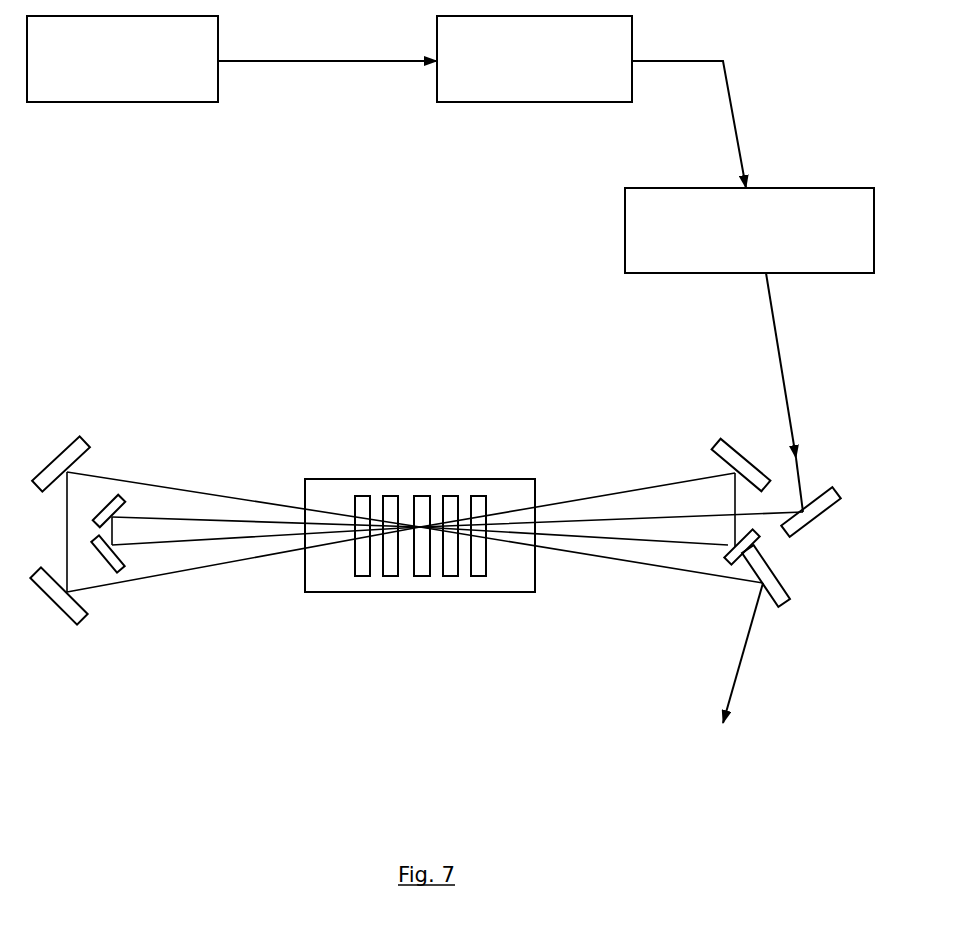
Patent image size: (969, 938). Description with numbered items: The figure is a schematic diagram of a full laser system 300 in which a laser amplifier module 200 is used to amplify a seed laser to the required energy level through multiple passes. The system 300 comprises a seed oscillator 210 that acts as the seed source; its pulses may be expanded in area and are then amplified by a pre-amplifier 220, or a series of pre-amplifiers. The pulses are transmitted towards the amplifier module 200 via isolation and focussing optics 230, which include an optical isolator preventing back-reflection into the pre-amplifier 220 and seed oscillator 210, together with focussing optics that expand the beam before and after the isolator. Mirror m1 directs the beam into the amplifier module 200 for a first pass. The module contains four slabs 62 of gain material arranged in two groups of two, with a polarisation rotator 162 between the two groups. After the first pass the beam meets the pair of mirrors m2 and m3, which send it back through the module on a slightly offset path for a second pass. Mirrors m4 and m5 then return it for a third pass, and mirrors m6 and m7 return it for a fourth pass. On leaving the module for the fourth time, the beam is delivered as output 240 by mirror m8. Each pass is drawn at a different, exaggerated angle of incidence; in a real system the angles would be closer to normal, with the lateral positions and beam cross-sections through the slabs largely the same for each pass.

The laser system 300 is at (378, 239).
The seed oscillator 210 is at (122, 59).
The pre-amplifier 220 is at (534, 59).
The isolation and focussing optics 230 is at (749, 230).
The laser amplifier module 200 is at (405, 500).
The slabs 62 is at (363, 495).
The polarisation rotator 162 is at (421, 570).
The output 240 is at (707, 670).
The mirror m1 is at (813, 516).
The mirror m2 is at (124, 555).
The mirror m3 is at (125, 508).
The mirror m4 is at (726, 547).
The mirror m5 is at (723, 465).
The mirror m6 is at (54, 596).
The mirror m7 is at (55, 463).
The mirror m8 is at (782, 584).